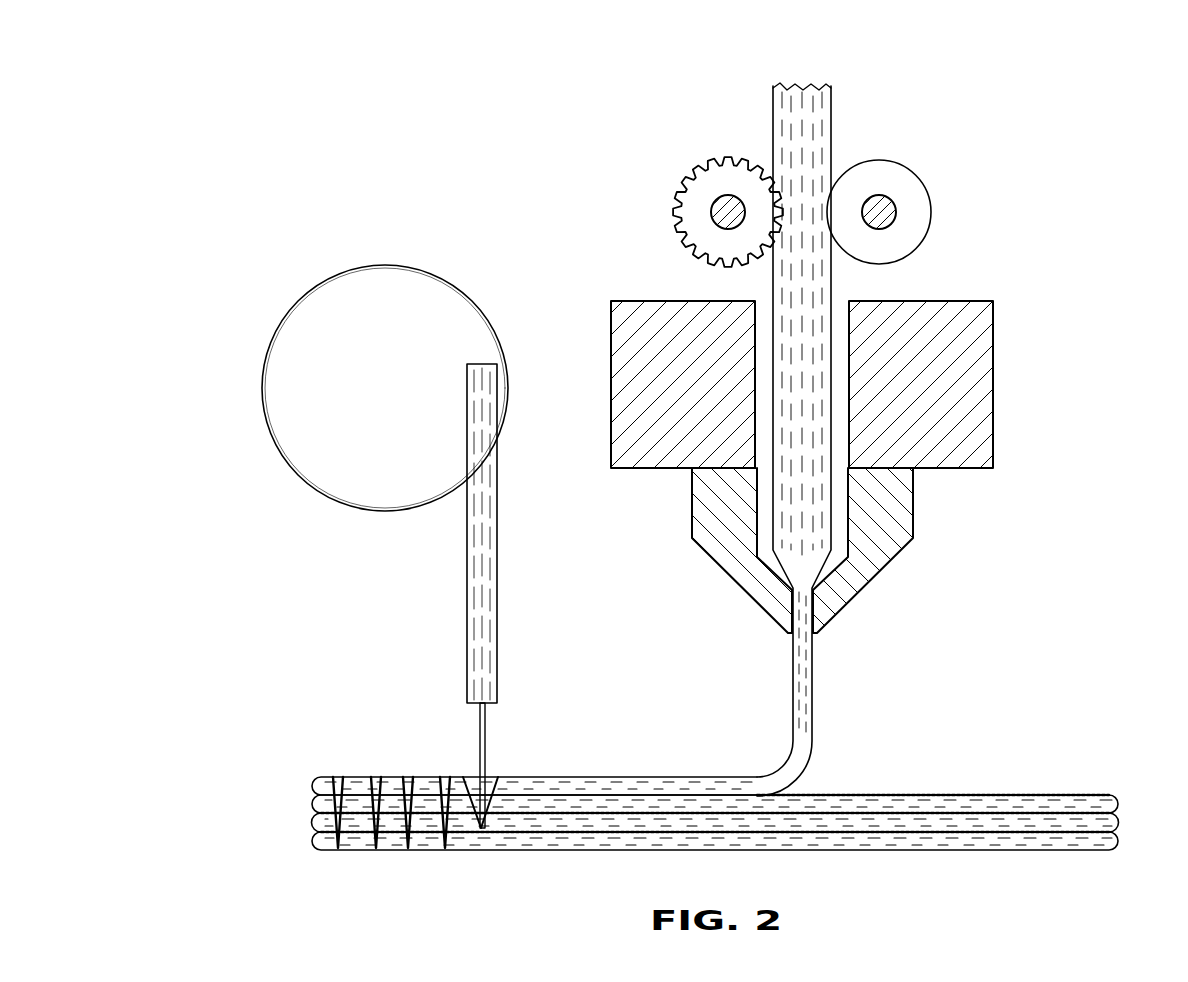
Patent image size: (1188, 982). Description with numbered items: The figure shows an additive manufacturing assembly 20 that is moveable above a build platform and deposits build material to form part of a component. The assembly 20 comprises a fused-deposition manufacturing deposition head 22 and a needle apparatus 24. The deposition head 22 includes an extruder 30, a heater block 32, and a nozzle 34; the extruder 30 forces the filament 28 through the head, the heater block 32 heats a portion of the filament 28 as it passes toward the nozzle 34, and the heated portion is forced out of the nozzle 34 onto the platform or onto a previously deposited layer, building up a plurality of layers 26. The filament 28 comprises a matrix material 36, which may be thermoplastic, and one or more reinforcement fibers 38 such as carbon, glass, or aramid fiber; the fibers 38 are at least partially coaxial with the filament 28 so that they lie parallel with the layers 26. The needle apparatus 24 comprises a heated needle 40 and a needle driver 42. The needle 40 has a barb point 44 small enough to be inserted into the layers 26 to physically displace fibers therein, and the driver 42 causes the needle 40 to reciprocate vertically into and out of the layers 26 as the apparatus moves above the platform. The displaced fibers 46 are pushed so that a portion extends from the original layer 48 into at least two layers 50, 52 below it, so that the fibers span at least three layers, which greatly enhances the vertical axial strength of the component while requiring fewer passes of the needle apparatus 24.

The additive manufacturing assembly 20 is at (1100, 115).
The fused-deposition manufacturing deposition head 22 is at (985, 272).
The needle apparatus 24 is at (262, 292).
The layers 26 is at (705, 791).
The filament 28 is at (814, 439).
The extruder 30 is at (915, 205).
The heater block 32 is at (985, 365).
The nozzle 34 is at (892, 535).
The matrix material 36 is at (906, 793).
The reinforcement fibers 38 is at (790, 138).
The heated needle 40 is at (492, 585).
The needle driver 42 is at (283, 412).
The barb point 44 is at (480, 748).
The displaced fibers 46 is at (413, 783).
The original layer 48 is at (312, 785).
The layer below original layer 50 is at (312, 803).
The second layer below original layer 52 is at (312, 842).